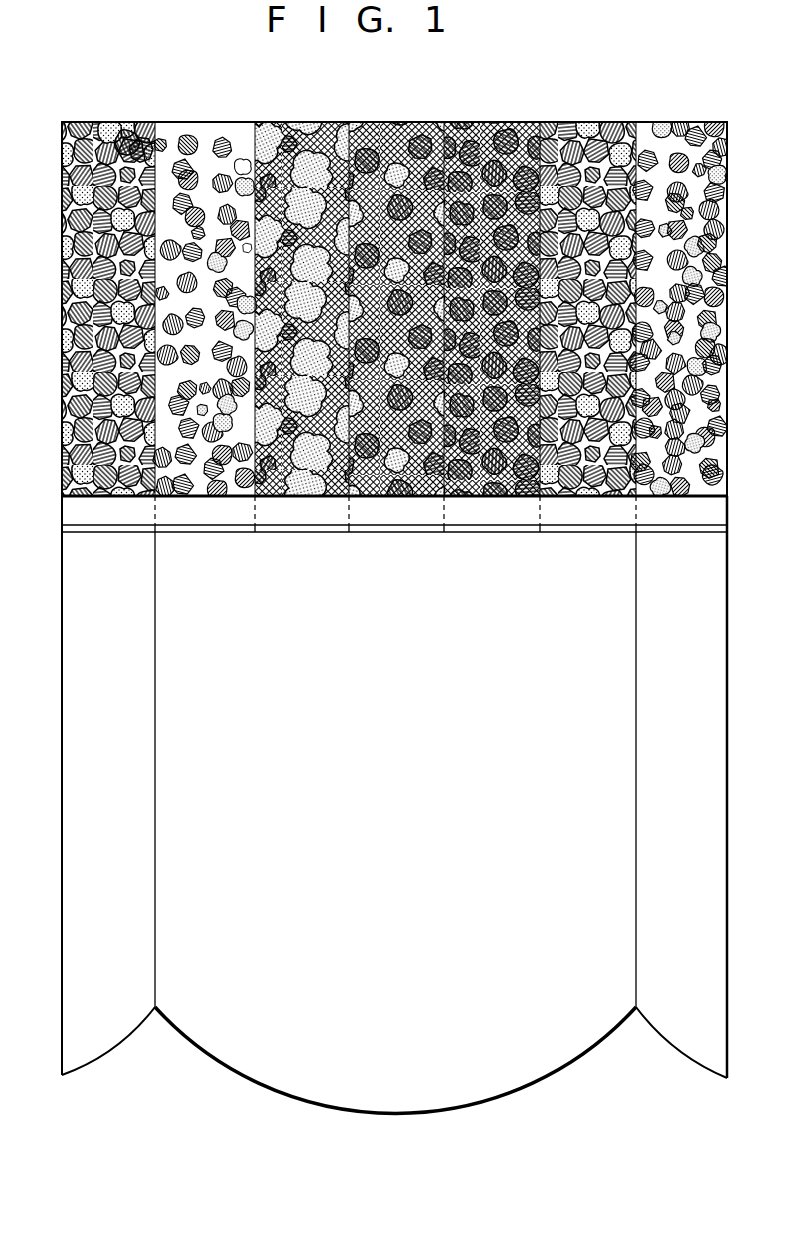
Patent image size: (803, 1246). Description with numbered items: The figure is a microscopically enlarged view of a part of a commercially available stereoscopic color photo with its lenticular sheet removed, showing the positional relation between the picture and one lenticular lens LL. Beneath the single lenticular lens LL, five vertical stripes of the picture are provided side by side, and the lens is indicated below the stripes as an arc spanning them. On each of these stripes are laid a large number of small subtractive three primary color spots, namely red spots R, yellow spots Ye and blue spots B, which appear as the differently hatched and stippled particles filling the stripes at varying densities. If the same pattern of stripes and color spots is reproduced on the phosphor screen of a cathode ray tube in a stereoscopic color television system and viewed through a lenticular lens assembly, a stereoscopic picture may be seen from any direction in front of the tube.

The yellow spots Ye is at (110, 124).
The blue spots B is at (126, 140).
The red spots R is at (139, 148).
The lenticular lens LL is at (574, 1043).